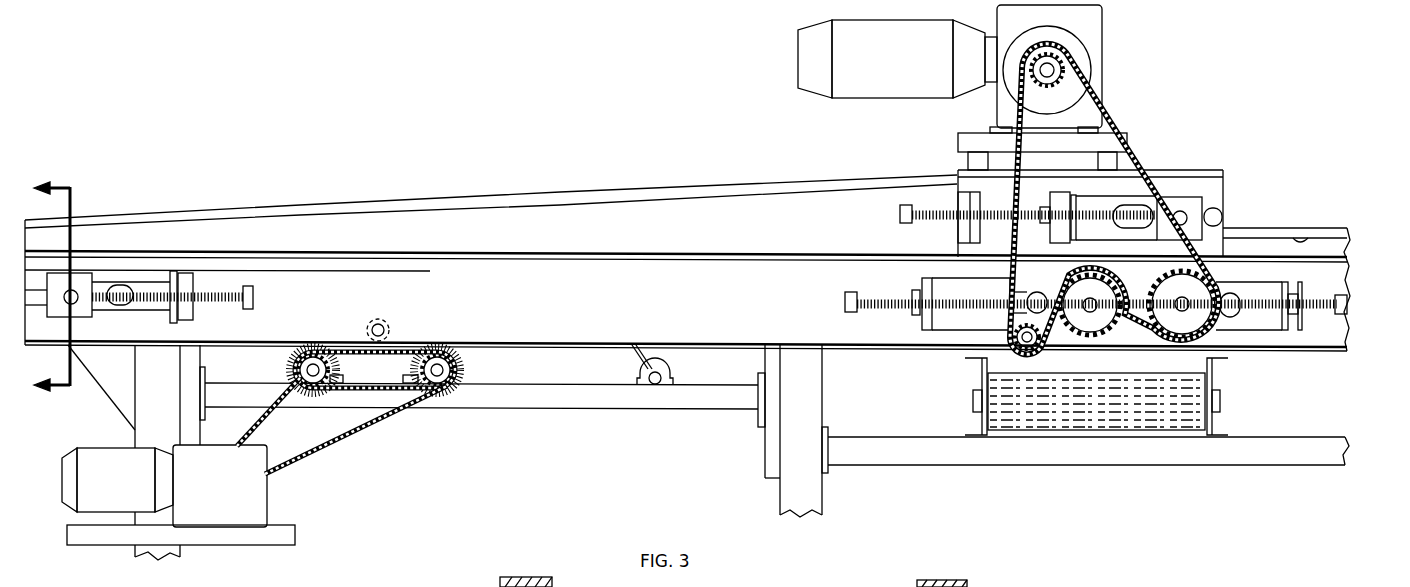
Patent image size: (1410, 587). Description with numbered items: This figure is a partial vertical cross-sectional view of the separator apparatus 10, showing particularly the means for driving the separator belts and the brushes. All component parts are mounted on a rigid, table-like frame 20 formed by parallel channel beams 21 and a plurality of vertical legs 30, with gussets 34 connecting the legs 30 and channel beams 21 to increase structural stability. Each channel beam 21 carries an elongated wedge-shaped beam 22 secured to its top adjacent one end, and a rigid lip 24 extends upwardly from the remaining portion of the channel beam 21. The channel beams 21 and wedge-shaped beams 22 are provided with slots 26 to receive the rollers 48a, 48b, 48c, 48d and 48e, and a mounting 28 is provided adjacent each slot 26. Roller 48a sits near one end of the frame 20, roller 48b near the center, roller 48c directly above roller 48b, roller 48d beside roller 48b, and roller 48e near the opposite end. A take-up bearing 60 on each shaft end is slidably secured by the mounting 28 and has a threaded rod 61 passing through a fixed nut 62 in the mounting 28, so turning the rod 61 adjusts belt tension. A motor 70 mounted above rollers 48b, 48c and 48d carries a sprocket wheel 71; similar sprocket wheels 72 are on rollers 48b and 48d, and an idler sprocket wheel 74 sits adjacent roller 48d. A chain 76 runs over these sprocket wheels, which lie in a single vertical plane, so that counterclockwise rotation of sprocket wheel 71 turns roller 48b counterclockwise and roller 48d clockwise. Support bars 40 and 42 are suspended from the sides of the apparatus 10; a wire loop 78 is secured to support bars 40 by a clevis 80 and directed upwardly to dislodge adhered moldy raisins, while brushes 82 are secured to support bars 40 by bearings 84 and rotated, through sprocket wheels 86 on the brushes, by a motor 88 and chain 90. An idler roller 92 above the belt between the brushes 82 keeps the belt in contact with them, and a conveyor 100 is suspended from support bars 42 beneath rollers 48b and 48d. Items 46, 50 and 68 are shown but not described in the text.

The apparatus 10 is at (475, 56).
The frame 20 is at (1350, 250).
The channel beam 21 is at (605, 290).
The wedge-shaped beam 22 is at (710, 224).
The lip 24 is at (1300, 238).
The slot 26 is at (120, 286).
The mounting 28 is at (185, 272).
The leg 30 is at (170, 562).
The gusset 34 is at (112, 372).
The support bar 40 is at (520, 397).
The support bar 42 is at (945, 437).
The base plate 46 is at (258, 540).
The roller 48a is at (628, 584).
The roller 48b is at (1213, 325).
The roller 48c is at (1222, 218).
The roller 48d is at (1055, 272).
The roller 48e is at (42, 300).
The guide 50 is at (801, 584).
The take-up bearing 60 is at (60, 280).
The threaded rod 61 is at (165, 300).
The fixed nut 62 is at (183, 275).
The guide rail 68 is at (570, 586).
The motor 70 is at (912, 50).
The sprocket wheel 71 is at (1045, 58).
The sprocket wheel 72 is at (1090, 335).
The idler sprocket wheel 74 is at (1038, 350).
The chain 76 is at (1105, 115).
The wire loop 78 is at (630, 356).
The clevis 80 is at (650, 388).
The brush 82 is at (312, 348).
The bearing 84 is at (330, 380).
The sprocket wheel 86 is at (415, 362).
The motor 88 is at (238, 500).
The chain 90 is at (340, 443).
The idler roller 92 is at (376, 318).
The conveyor 100 is at (1120, 403).